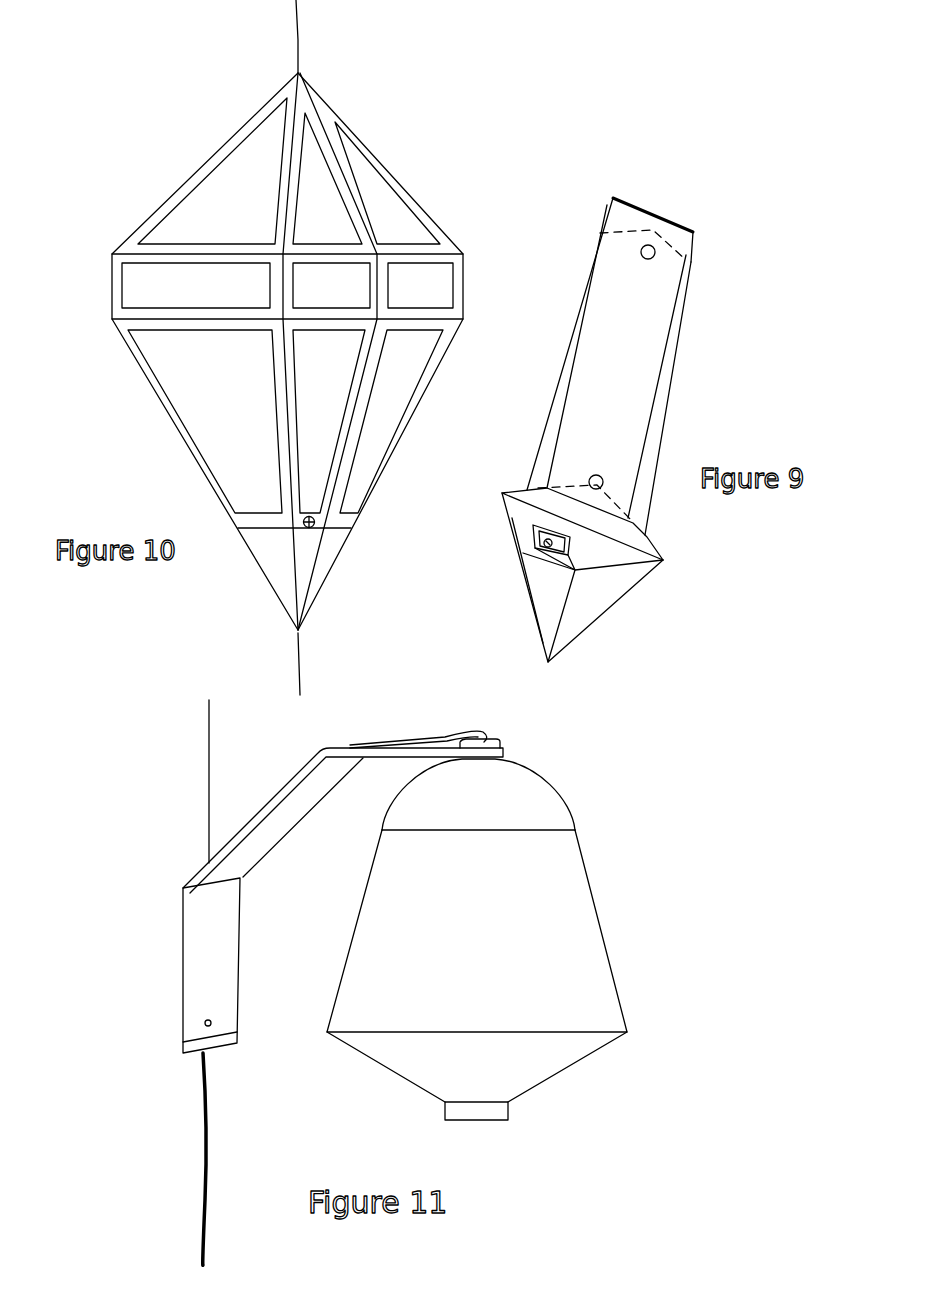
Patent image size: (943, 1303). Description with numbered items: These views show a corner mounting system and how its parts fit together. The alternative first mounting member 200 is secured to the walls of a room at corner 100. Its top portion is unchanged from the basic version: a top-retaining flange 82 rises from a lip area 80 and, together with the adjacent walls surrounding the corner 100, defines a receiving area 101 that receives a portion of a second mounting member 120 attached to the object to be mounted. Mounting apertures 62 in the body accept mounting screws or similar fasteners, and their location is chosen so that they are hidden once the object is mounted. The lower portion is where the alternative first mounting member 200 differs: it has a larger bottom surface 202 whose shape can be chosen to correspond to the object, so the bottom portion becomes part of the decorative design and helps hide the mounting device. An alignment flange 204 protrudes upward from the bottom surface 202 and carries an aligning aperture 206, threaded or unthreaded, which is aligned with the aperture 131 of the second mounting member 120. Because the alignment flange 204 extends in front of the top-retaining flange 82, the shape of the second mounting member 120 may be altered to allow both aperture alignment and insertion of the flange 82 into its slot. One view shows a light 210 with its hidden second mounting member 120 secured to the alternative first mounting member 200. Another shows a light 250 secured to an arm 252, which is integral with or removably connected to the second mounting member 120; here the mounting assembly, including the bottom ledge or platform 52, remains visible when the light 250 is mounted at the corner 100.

In FIG. 10, the corner 100 is at (300, 39).
In FIG. 11, the corner 100 is at (200, 1165).
In FIG. 10, the first mounting member 200 is at (330, 573).
In FIG. 9, the first mounting member 200 is at (692, 382).
In FIG. 10, the light 210 is at (136, 381).
In FIG. 9, the lip area 80 is at (600, 233).
In FIG. 9, the top-retaining flange 82 is at (633, 200).
In FIG. 9, the receiving area 101 is at (666, 199).
In FIG. 9, the mounting aperture 62 is at (656, 260).
In FIG. 9, the bottom surface 202 is at (617, 550).
In FIG. 9, the alignment flange 204 is at (565, 560).
In FIG. 9, the aligning aperture 206 is at (525, 553).
In FIG. 11, the arm 252 is at (302, 768).
In FIG. 11, the light 250 is at (642, 932).
In FIG. 11, the second mounting member 120 is at (217, 972).
In FIG. 11, the aperture 131 is at (213, 1021).
In FIG. 11, the ledge or platform 52 is at (190, 1048).